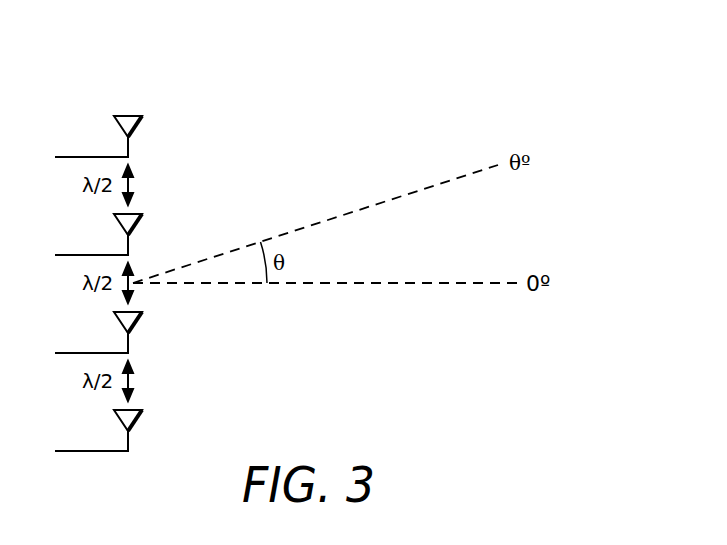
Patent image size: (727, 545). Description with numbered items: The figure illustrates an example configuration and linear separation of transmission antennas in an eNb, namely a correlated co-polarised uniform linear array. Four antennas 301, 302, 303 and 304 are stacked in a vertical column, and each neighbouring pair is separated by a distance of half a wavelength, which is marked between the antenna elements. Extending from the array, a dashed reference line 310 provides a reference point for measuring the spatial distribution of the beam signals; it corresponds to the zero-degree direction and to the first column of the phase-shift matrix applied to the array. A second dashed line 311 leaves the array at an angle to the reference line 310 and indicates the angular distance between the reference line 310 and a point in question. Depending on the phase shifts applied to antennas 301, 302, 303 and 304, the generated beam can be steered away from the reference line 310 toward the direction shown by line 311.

The antenna 301 is at (141, 121).
The antenna 302 is at (141, 219).
The antenna 303 is at (141, 317).
The antenna 304 is at (141, 415).
The reference line 310 is at (458, 284).
The line indicating angular distance 311 is at (442, 183).